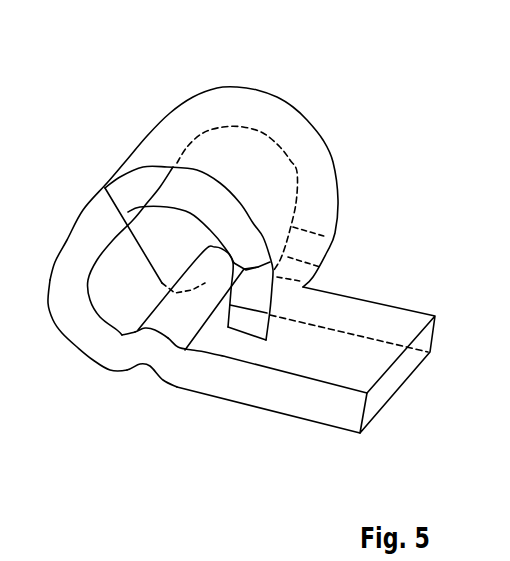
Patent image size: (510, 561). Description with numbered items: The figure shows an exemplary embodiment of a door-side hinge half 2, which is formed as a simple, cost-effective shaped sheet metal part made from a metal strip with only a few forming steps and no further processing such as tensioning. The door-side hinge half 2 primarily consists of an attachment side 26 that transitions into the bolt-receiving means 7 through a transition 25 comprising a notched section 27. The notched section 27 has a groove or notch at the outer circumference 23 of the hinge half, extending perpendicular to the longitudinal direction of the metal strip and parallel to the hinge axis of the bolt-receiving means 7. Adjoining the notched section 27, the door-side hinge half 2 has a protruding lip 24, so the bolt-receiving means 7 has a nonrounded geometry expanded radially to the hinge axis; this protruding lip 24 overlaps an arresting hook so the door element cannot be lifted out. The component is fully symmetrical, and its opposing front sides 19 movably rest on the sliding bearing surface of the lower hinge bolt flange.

The door-side hinge half 2 is at (355, 57).
The bolt-receiving means 7 is at (98, 193).
The front sides 19 is at (303, 113).
The outer circumference 23 is at (72, 235).
The protruding lip 24 is at (100, 348).
The transition 25 is at (156, 397).
The attachment side 26 is at (280, 394).
The notched section 27 is at (144, 369).